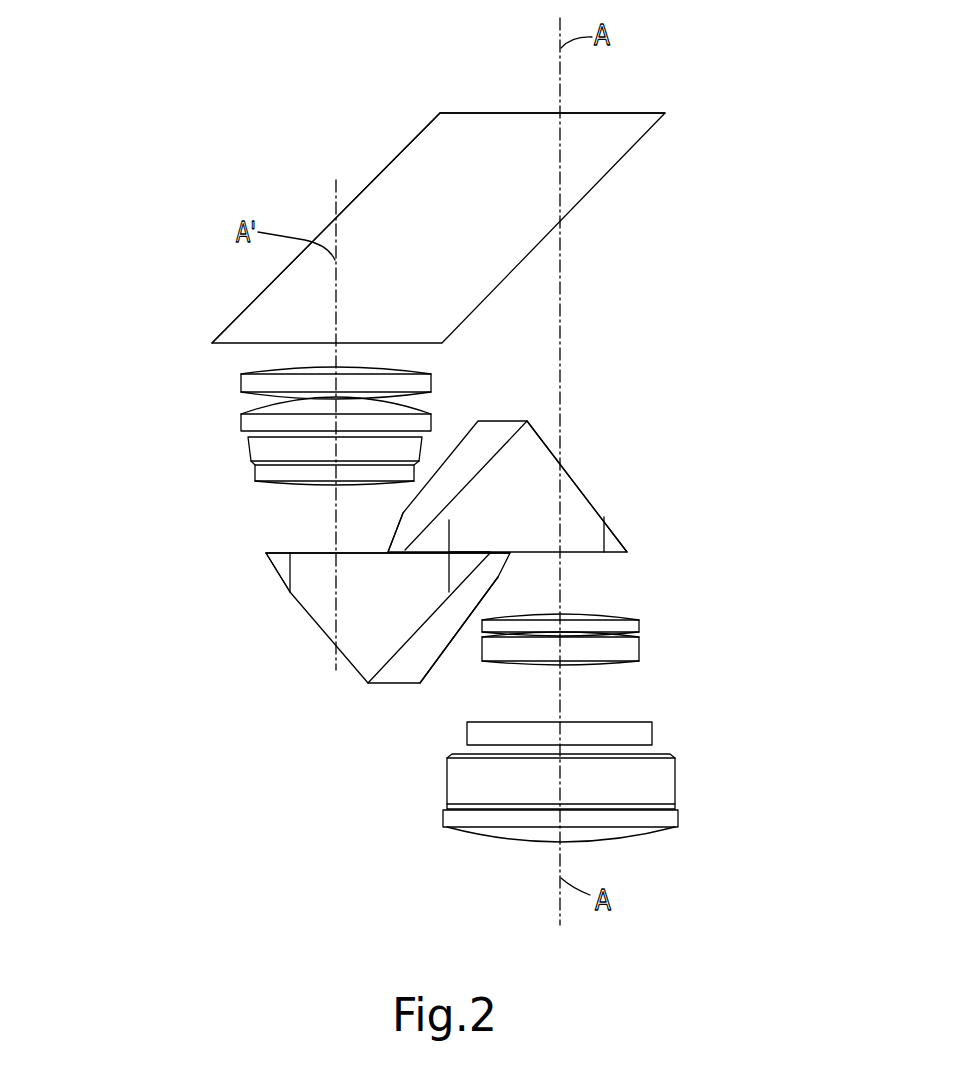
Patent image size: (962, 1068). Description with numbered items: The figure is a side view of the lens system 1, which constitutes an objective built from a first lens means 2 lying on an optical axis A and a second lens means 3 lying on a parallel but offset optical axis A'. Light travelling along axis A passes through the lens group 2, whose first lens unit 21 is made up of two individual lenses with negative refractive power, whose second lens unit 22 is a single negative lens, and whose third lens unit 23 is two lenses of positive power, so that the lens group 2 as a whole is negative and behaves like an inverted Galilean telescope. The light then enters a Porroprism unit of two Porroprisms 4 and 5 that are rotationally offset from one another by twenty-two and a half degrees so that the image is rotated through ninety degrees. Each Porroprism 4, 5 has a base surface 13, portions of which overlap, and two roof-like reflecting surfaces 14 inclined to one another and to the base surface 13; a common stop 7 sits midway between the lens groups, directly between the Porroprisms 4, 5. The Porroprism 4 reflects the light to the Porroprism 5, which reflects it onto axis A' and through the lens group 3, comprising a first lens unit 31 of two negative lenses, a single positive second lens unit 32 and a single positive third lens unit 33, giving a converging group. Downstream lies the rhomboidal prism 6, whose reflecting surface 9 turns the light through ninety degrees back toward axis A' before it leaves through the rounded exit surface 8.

The lens system 1 is at (176, 120).
The first lens means 2 is at (674, 724).
The second lens means 3 is at (223, 421).
The Porroprism 4 is at (587, 513).
The Porroprism 5 is at (315, 605).
The rhomboidal prism 6 is at (588, 177).
The common stop 7 is at (468, 550).
The exit surface 8 is at (528, 113).
The reflecting surface 9 is at (385, 167).
The base surface 13 is at (310, 553).
The reflecting surfaces 14 is at (475, 443).
The first lens unit 21 is at (663, 783).
The second lens unit 22 is at (632, 728).
The third lens unit 23 is at (633, 650).
The first lens unit 31 is at (256, 470).
The second lens unit 32 is at (243, 424).
The third lens unit 33 is at (241, 380).